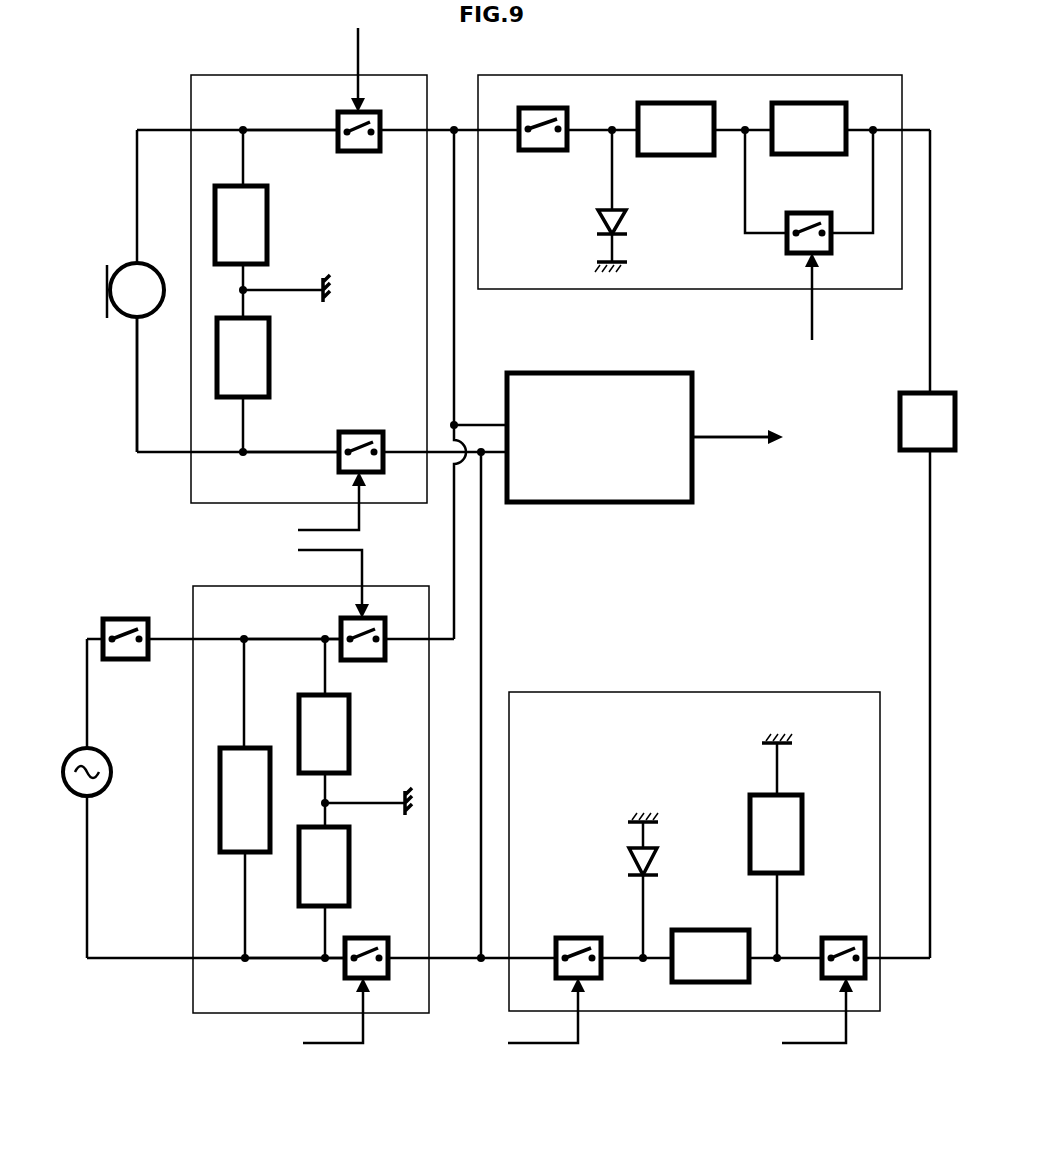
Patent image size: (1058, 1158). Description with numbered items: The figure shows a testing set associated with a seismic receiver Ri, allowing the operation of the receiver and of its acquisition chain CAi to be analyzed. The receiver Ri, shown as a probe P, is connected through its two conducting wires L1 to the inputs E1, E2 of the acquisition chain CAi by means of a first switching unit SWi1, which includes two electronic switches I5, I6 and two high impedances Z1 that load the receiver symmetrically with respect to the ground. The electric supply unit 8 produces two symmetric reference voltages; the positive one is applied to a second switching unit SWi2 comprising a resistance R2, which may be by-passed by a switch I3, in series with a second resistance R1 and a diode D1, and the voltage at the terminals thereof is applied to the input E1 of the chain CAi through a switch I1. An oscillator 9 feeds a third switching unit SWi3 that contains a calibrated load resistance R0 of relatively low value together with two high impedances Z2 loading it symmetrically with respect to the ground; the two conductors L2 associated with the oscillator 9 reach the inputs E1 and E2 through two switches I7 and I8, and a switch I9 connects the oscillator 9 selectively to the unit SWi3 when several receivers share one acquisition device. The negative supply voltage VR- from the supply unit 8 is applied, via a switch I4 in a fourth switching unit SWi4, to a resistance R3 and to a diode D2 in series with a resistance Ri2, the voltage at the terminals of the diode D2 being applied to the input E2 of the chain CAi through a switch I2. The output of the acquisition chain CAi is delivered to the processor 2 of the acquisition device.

The electric supply unit 8 is at (927, 421).
The oscillator 9 is at (108, 757).
The processor 2 is at (755, 436).
The first switching unit SWi1 is at (192, 503).
The second switching unit SWi2 is at (685, 290).
The third switching unit SWi3 is at (193, 586).
The fourth switching unit SWi4 is at (655, 655).
The seismic receiver Ri is at (107, 282).
The probe P is at (134, 358).
The conducting wires L1 is at (277, 130).
The conductors L2 is at (289, 639).
The high impedances Z1 is at (255, 238).
The high impedances Z2 is at (337, 747).
The switch I1 is at (543, 142).
The switch I2 is at (554, 976).
The switch I3 is at (809, 263).
The switch I4 is at (823, 975).
The electronic switch I5 is at (359, 107).
The electronic switch I6 is at (340, 465).
The switch I7 is at (341, 622).
The switch I8 is at (345, 977).
The switch I9 is at (125, 658).
The calibrated load resistance R0 is at (258, 812).
The second resistance R1 is at (690, 142).
The resistance R2 is at (823, 142).
The resistance R3 is at (789, 846).
The resistance Ri2 is at (721, 969).
The diode D1 is at (628, 201).
The diode D2 is at (659, 885).
The acquisition chain CAi is at (612, 451).
The input E1 is at (524, 425).
The input E2 is at (524, 453).
The reference voltage VR- is at (898, 477).